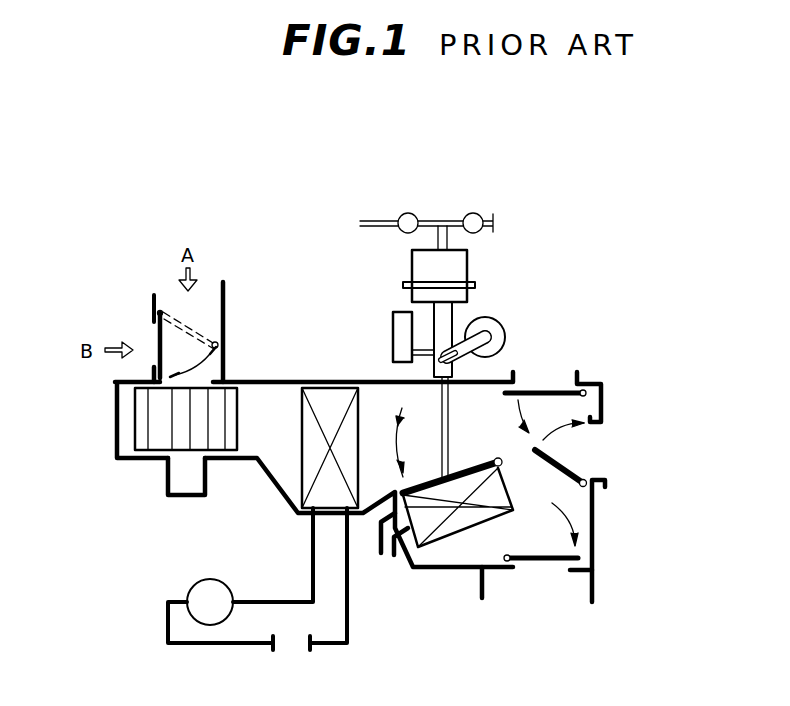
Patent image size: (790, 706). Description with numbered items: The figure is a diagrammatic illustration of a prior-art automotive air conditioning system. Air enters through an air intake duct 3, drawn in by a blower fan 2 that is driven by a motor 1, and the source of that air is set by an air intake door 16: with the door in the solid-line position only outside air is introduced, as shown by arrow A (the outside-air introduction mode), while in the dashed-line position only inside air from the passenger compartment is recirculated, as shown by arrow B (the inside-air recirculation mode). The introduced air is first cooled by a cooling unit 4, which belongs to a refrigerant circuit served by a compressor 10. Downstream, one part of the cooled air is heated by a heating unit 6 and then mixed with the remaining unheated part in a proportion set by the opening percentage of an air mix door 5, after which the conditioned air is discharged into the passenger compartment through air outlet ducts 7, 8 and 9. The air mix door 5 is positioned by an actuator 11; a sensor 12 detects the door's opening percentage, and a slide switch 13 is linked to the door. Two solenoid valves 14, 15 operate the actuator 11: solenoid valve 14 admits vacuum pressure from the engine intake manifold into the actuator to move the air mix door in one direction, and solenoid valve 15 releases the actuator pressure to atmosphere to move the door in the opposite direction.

The motor 1 is at (178, 480).
The blower fan 2 is at (147, 425).
The air intake duct 3 is at (197, 380).
The cooling unit 4 is at (308, 480).
The air mix door 5 is at (476, 475).
The heating unit 6 is at (440, 530).
The air outlet duct 7 is at (557, 565).
The air outlet duct 8 is at (567, 455).
The air outlet duct 9 is at (548, 390).
The compressor 10 is at (207, 598).
The actuator 11 is at (467, 268).
The sensor 12 is at (495, 327).
The slide switch 13 is at (393, 340).
The solenoid valve 14 is at (408, 213).
The solenoid valve 15 is at (473, 213).
The air intake door 16 is at (160, 338).